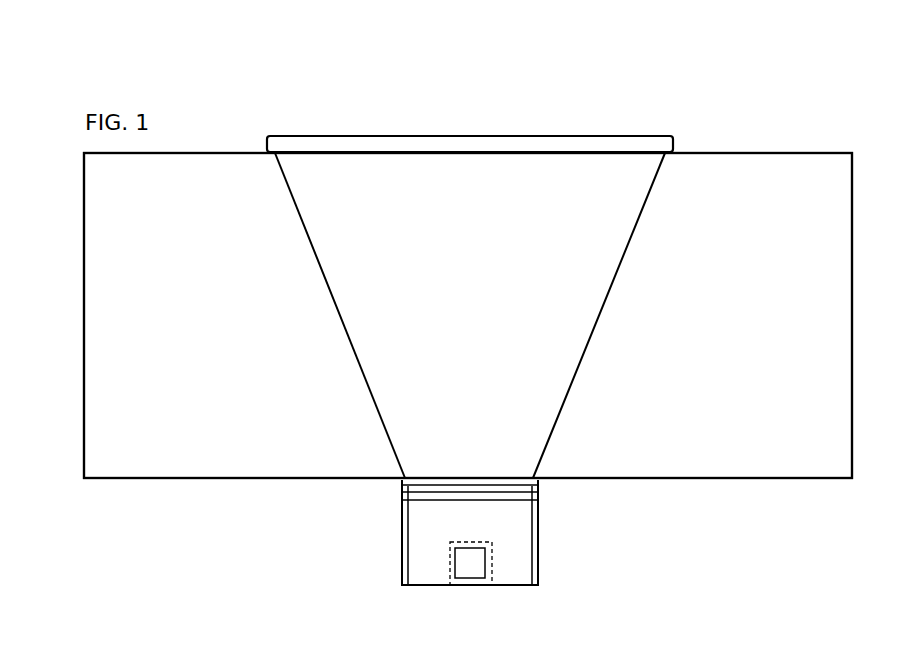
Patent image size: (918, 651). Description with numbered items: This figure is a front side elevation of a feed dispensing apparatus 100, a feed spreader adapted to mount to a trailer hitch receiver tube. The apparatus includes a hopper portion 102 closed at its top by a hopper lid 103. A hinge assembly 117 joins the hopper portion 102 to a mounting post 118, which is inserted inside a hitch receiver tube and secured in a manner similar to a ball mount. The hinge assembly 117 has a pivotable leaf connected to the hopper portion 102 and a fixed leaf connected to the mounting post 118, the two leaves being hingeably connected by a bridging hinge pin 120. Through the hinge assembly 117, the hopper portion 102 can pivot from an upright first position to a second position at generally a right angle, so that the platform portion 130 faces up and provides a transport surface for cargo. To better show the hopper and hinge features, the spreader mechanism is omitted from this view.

The feed dispensing apparatus 100 is at (736, 98).
The hopper portion 102 is at (350, 165).
The hopper lid 103 is at (474, 136).
The hinge assembly 117 is at (566, 581).
The mounting post 118 is at (450, 585).
The hinge pin 120 is at (402, 490).
The platform portion 130 is at (812, 150).